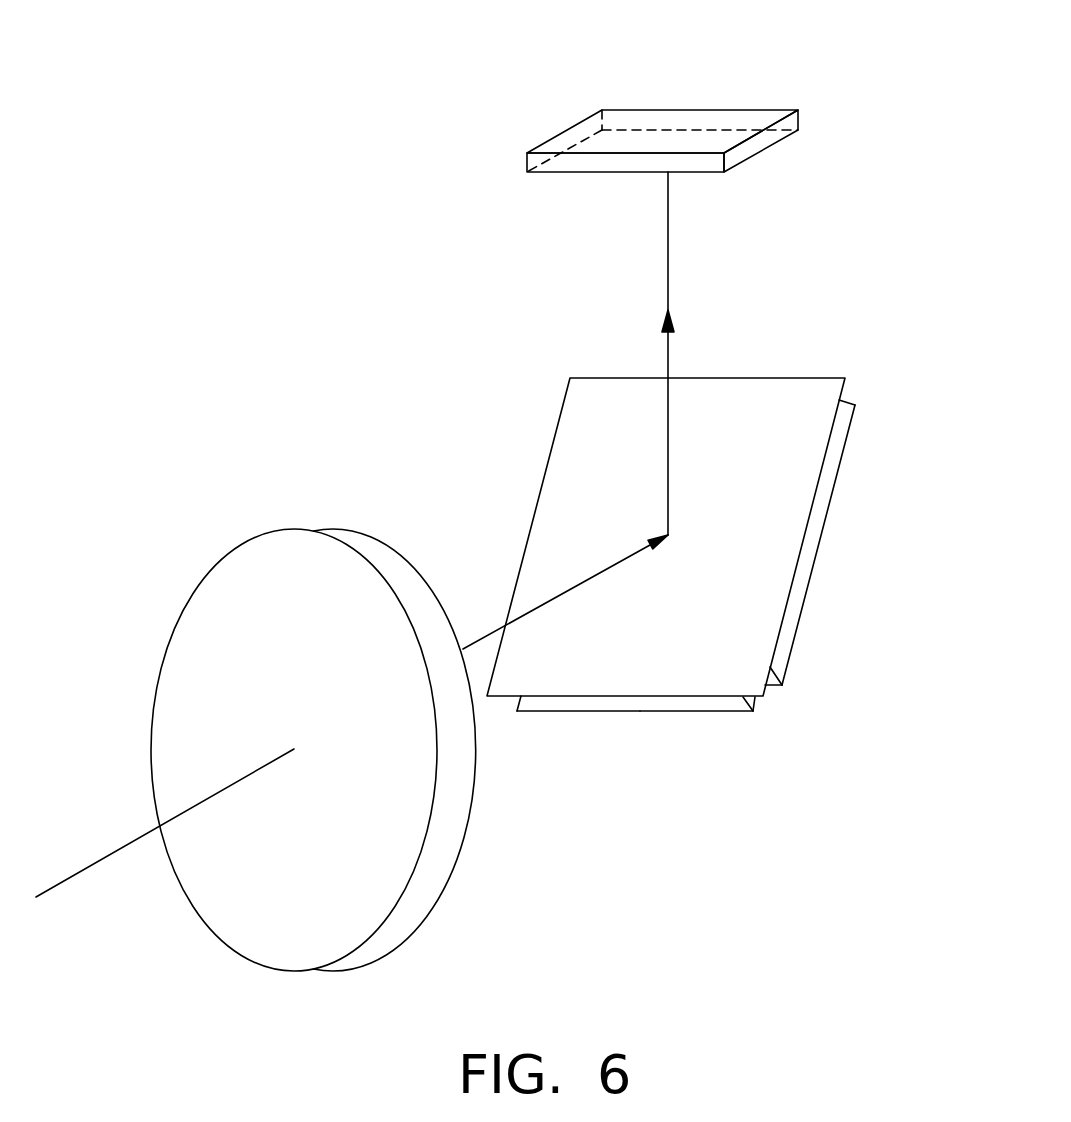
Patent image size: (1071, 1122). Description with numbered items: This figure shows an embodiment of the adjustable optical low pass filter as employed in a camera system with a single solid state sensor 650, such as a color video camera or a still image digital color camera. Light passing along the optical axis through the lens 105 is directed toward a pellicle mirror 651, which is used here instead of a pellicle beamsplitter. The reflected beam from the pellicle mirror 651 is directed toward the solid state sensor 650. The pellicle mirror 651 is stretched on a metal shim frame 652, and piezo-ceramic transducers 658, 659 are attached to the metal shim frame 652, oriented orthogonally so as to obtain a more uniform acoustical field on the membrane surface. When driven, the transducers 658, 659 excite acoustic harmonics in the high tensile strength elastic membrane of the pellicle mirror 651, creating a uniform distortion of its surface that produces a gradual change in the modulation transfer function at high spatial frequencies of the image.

The solid state sensor 650 is at (688, 117).
The pellicle mirror 651 is at (627, 507).
The metal shim frame 652 is at (570, 699).
The piezo-ceramic transducer 658 is at (707, 703).
The piezo-ceramic transducer 659 is at (798, 587).
The lens 105 is at (333, 970).